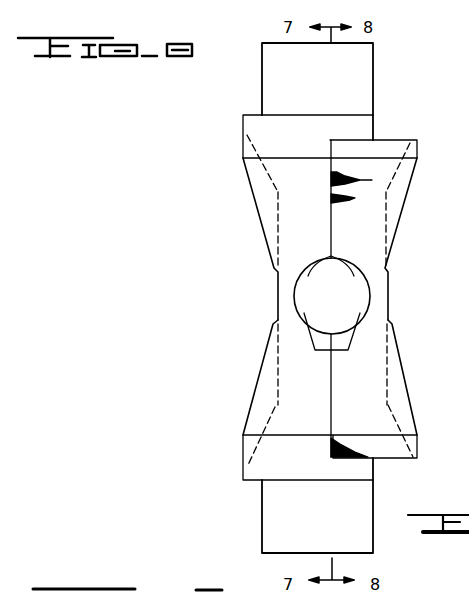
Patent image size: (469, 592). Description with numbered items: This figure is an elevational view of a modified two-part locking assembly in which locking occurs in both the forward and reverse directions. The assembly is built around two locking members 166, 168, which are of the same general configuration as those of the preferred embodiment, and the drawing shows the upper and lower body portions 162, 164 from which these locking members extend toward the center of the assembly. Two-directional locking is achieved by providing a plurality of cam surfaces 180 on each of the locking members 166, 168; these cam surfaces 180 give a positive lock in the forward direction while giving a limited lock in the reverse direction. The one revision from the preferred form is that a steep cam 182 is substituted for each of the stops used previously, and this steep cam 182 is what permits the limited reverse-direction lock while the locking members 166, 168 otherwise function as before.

The upper body portion 162 is at (328, 93).
The lower body portion 164 is at (331, 533).
The locking member 166 is at (321, 236).
The locking member 168 is at (372, 402).
The cam surfaces 180 is at (352, 290).
The steep cam 182 is at (331, 274).